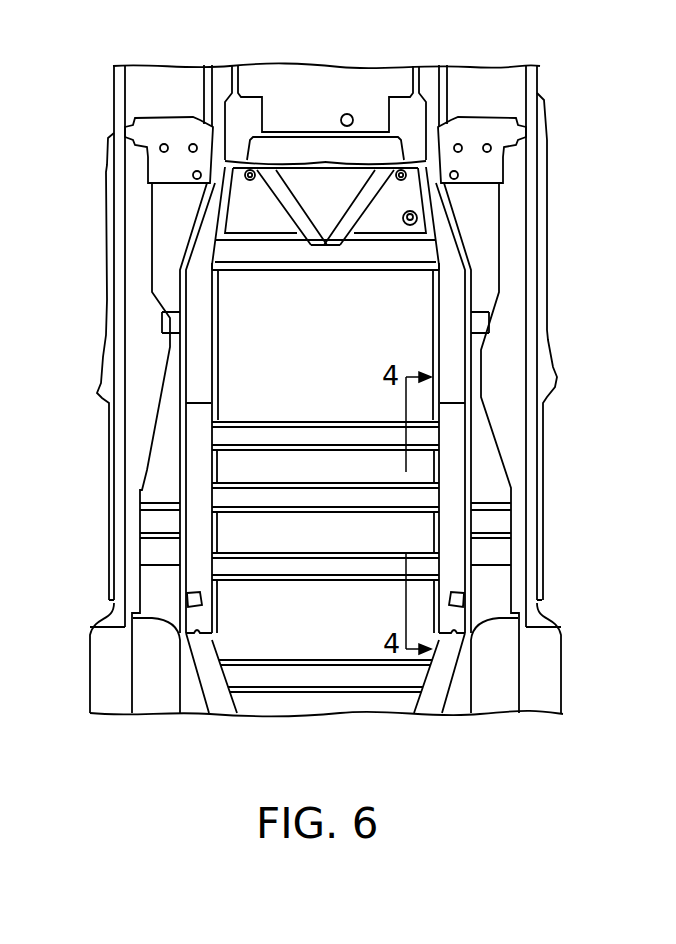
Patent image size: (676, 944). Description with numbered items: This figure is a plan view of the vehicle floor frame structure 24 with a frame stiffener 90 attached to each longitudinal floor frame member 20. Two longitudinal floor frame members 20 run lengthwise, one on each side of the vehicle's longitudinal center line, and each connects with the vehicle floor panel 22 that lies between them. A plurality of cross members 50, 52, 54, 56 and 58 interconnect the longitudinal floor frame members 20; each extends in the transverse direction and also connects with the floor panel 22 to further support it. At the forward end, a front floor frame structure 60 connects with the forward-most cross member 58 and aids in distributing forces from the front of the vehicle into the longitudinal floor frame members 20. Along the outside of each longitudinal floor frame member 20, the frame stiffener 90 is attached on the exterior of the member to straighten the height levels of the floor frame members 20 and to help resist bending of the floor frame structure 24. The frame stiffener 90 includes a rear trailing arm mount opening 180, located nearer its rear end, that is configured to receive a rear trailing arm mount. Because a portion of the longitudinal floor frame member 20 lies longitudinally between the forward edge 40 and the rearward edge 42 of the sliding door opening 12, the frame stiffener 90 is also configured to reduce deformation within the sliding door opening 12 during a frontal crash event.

The vehicle floor frame structure 24 is at (571, 119).
The sliding door opening 12 is at (87, 391).
The forward edge 40 is at (98, 392).
The rearward edge 42 is at (93, 620).
The longitudinal floor frame member 20 is at (200, 268).
The vehicle floor panel 22 is at (248, 344).
The cross member 58 is at (420, 252).
The front floor frame structure 60 is at (436, 199).
The cross member 56 is at (425, 436).
The cross member 54 is at (427, 499).
The cross member 52 is at (427, 567).
The cross member 50 is at (427, 675).
The rear trailing arm mount opening 180 is at (468, 601).
The frame stiffener 90 is at (198, 427).